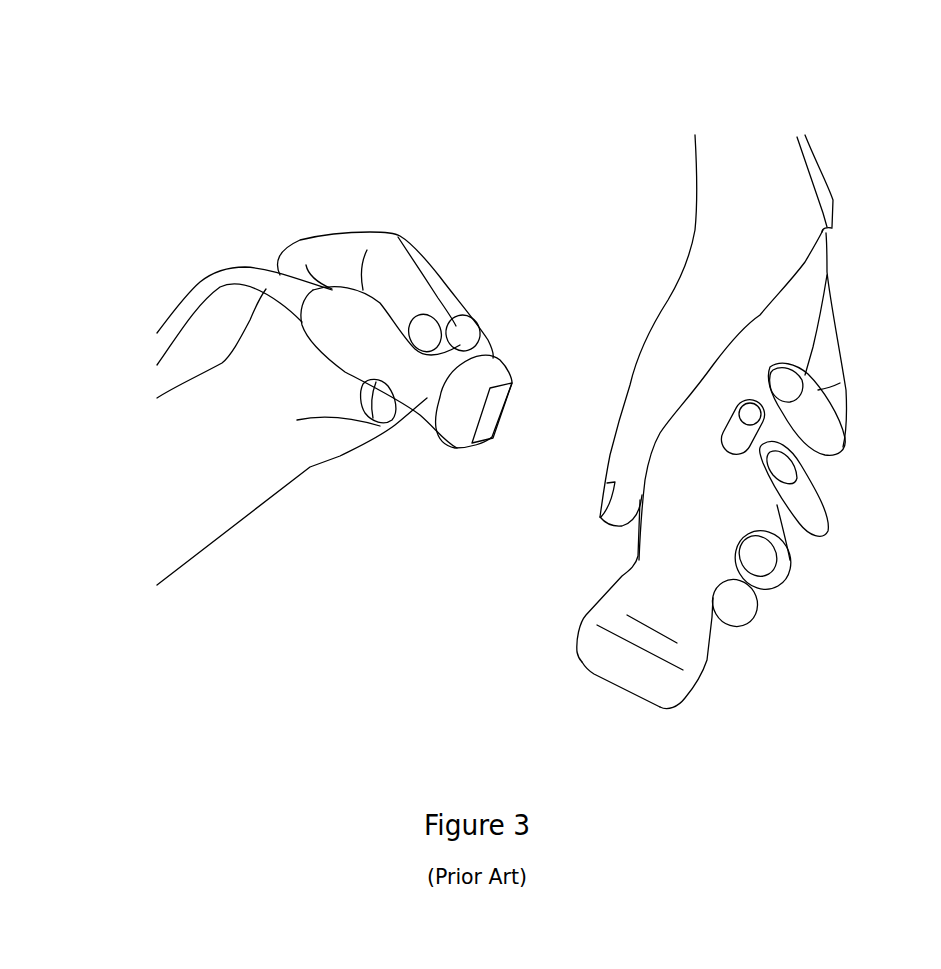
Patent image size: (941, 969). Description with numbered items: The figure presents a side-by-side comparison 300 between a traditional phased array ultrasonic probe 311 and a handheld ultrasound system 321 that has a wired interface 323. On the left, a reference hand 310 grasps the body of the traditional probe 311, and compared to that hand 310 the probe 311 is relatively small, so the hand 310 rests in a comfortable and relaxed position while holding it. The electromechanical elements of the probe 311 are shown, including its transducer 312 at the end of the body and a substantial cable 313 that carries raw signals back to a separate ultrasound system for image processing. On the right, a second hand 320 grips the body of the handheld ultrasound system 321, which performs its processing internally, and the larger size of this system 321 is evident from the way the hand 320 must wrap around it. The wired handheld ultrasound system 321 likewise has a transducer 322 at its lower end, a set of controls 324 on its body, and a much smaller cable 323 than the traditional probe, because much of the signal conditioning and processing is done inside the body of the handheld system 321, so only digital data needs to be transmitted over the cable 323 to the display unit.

The prior art remote control and mobile phone arrangement 300 is at (541, 70).
The reference hand 310 is at (382, 226).
The traditional phased array ultrasonic probe 311 is at (395, 319).
The transducer 312 is at (496, 431).
The cable 313 is at (218, 268).
The hand 320 is at (686, 276).
The handheld ultrasound system 321 is at (667, 577).
The transducer 322 is at (618, 684).
The wired interface 323 is at (836, 193).
The controls 324 is at (721, 418).